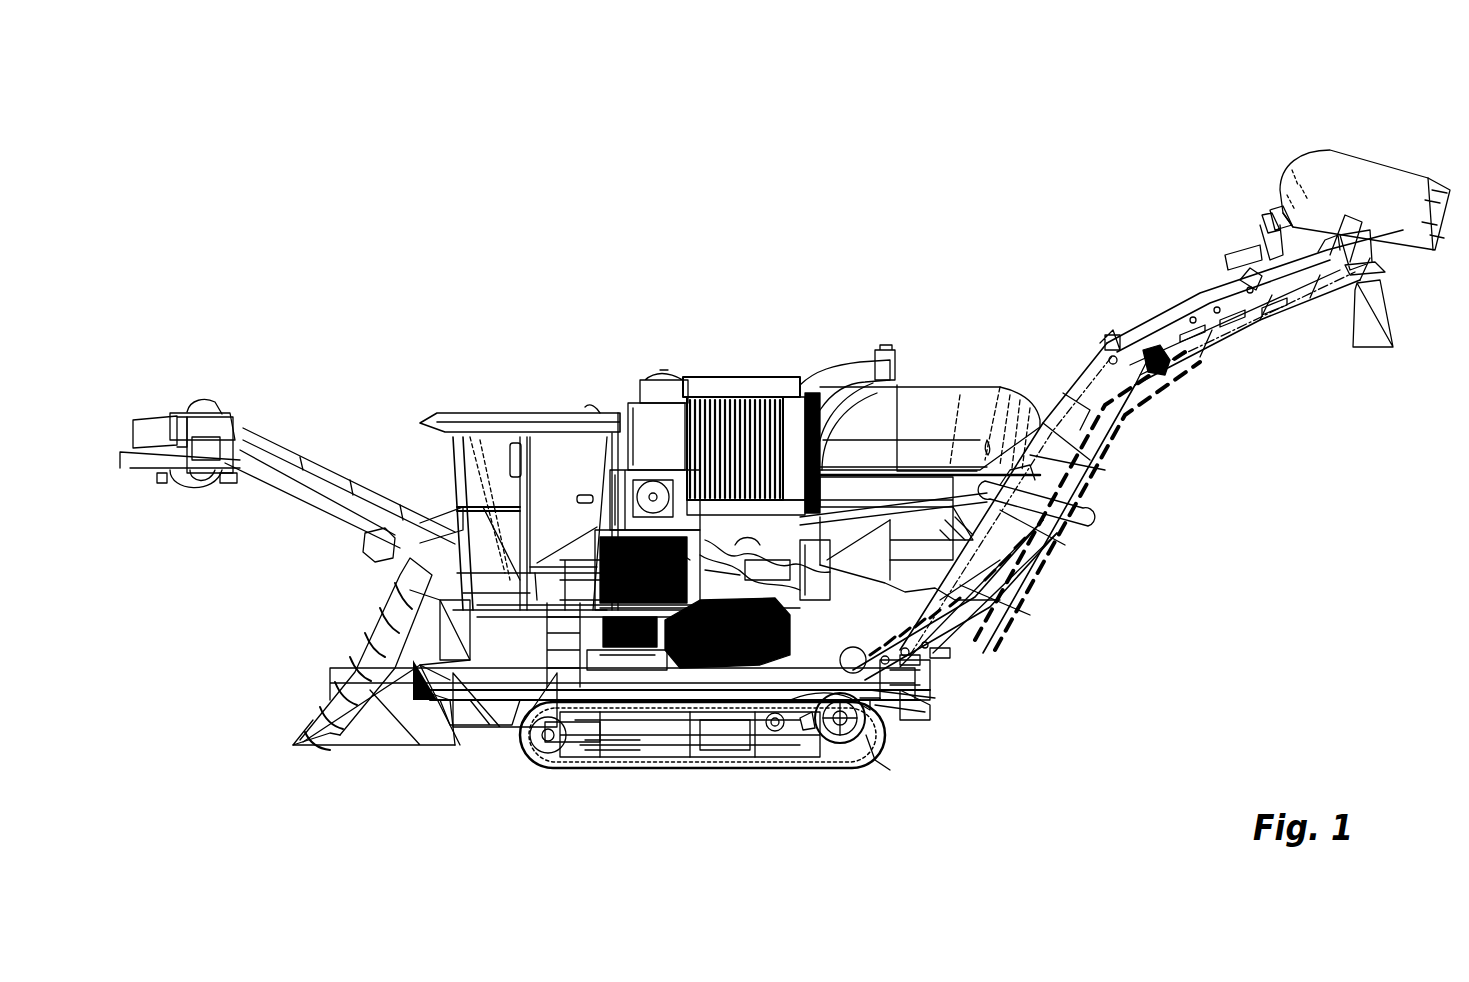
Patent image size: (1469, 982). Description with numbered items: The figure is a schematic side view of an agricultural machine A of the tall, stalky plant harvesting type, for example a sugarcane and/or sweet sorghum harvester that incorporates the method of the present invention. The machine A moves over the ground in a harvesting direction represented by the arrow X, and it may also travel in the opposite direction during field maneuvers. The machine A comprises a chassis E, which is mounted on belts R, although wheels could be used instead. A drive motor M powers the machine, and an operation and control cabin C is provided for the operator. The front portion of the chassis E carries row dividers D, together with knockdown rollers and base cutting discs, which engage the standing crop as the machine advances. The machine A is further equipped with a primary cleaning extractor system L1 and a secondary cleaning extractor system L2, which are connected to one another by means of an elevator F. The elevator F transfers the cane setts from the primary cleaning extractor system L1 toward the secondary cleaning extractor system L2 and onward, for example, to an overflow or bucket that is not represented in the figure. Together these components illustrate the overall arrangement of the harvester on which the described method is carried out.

The agricultural machine A is at (890, 222).
The operation and control cabin C is at (525, 412).
The drive motor M is at (672, 530).
The primary cleaning extractor system L1 is at (960, 412).
The secondary cleaning extractor system L2 is at (1333, 185).
The elevator F is at (1057, 527).
The row dividers D is at (348, 670).
The chassis E is at (504, 730).
The belts R is at (736, 770).
The arrow X is at (430, 820).